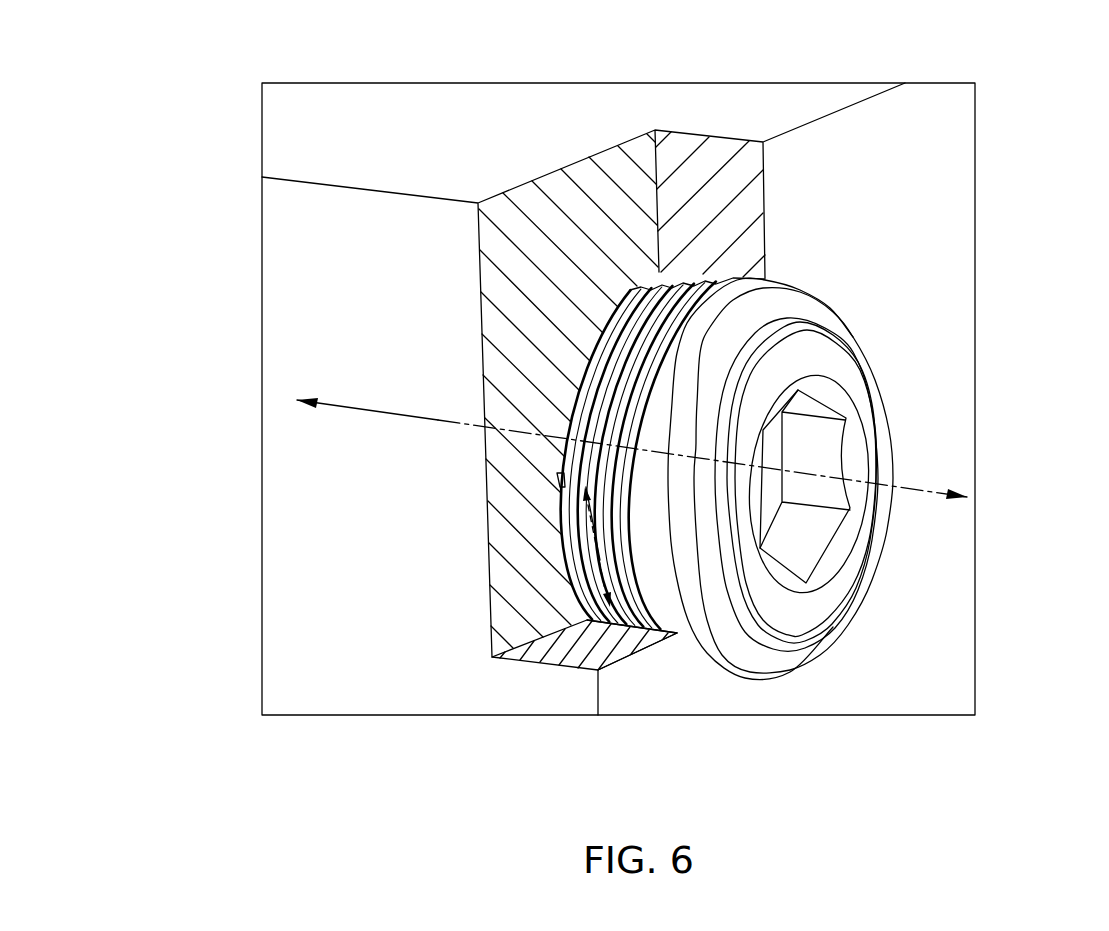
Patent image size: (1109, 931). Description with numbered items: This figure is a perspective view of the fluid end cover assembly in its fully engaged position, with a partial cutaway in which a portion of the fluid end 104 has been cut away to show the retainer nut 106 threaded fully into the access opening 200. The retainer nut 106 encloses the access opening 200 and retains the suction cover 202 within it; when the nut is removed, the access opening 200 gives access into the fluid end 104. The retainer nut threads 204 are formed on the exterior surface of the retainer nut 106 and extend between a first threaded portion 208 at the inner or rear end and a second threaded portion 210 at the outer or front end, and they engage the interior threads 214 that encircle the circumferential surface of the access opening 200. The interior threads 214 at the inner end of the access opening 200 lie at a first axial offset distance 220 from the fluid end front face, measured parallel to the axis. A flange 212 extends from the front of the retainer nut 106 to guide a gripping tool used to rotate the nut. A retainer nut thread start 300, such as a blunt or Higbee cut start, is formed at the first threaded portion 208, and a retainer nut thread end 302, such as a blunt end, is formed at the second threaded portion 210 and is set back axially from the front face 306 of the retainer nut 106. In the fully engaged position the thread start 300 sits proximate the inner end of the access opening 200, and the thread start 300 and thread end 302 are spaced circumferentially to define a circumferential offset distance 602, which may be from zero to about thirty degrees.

The fluid end 104 is at (850, 210).
The retainer nut 106 is at (785, 303).
The access opening 200 is at (807, 672).
The suction cover 202 is at (537, 372).
The retainer nut threads 204 is at (642, 280).
The first threaded portion 208 is at (557, 453).
The second threaded portion 210 is at (646, 638).
The flange 212 is at (822, 608).
The interior threads 214 is at (700, 277).
The first axial offset distance 220 is at (928, 470).
The retainer nut thread start 300 is at (558, 483).
The retainer nut thread end 302 is at (687, 632).
The front face 306 is at (757, 657).
The circumferential offset distance 602 is at (590, 590).